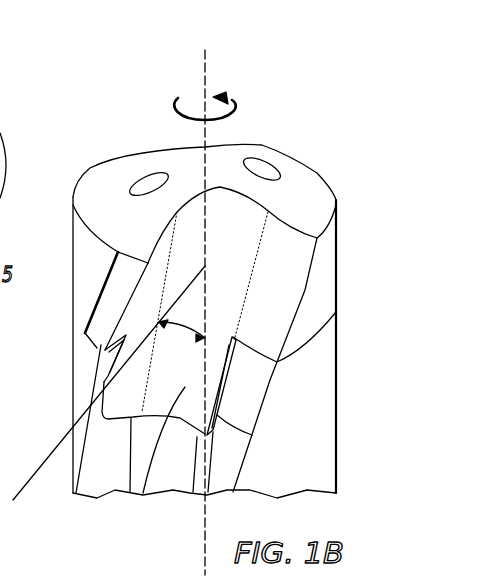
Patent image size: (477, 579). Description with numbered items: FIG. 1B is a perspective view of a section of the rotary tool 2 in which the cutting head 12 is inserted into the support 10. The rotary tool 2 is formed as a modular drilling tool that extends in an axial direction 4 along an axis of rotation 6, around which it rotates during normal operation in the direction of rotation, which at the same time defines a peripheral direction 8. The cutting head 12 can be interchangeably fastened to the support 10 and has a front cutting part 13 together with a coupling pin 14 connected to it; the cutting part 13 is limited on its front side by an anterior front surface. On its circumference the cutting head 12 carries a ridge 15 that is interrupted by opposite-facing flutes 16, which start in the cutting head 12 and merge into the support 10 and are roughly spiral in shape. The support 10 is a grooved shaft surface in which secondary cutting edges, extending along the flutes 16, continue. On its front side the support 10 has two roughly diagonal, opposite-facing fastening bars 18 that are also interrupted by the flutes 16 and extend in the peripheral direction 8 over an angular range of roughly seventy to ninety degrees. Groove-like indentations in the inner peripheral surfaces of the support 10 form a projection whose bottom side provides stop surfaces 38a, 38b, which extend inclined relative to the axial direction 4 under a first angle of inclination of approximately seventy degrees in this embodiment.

The rotary tool 2 is at (1, 95).
The axial direction 4 is at (204, 74).
The axis of rotation 6 is at (175, 310).
The peripheral direction 8 is at (238, 110).
The support 10 is at (343, 469).
The cutting head 12 is at (3, 216).
The cutting part 13 is at (302, 193).
The coupling pin 14 is at (142, 495).
The ridge 15 is at (322, 295).
The flutes 16 is at (2, 142).
The fastening bars 18 is at (83, 355).
The stop surface 38a is at (106, 368).
The stop surface 38b is at (119, 385).